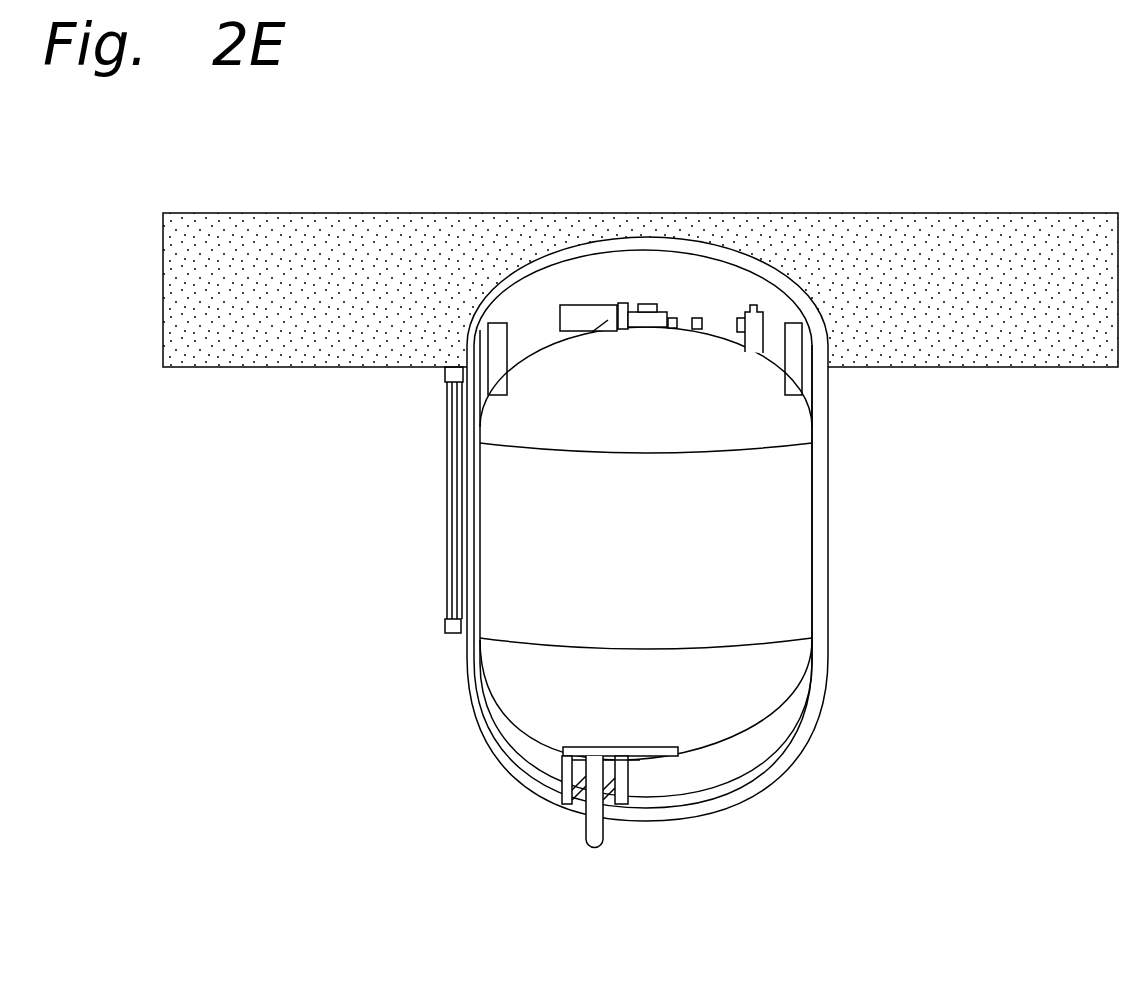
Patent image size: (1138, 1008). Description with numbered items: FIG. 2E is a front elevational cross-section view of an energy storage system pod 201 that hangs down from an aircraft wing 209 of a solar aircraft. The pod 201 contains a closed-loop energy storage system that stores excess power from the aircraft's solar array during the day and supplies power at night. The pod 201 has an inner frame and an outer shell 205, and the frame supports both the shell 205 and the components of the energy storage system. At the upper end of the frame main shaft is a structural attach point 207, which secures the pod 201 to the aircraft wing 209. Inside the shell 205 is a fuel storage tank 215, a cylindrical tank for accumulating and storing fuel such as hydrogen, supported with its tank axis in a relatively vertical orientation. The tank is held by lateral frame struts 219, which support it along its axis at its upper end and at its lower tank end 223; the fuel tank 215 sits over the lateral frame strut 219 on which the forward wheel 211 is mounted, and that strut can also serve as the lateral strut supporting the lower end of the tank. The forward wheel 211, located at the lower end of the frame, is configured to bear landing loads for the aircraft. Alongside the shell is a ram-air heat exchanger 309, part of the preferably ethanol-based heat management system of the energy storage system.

The pod 201 is at (468, 668).
The outer shell 205 is at (487, 700).
The structural attach point 207 is at (598, 313).
The aircraft wing 209 is at (303, 353).
The forward wheel 211 is at (580, 822).
The fuel storage tank 215 is at (600, 483).
The lateral frame struts 219 is at (577, 762).
The lower tank end 223 is at (642, 733).
The ram-air heat exchanger 309 is at (457, 552).